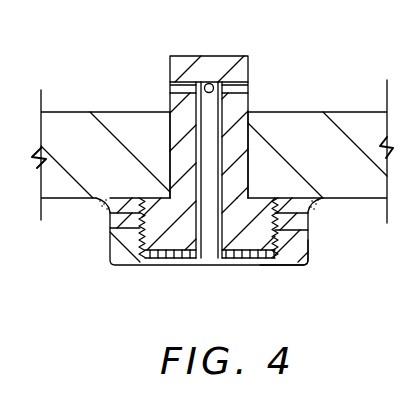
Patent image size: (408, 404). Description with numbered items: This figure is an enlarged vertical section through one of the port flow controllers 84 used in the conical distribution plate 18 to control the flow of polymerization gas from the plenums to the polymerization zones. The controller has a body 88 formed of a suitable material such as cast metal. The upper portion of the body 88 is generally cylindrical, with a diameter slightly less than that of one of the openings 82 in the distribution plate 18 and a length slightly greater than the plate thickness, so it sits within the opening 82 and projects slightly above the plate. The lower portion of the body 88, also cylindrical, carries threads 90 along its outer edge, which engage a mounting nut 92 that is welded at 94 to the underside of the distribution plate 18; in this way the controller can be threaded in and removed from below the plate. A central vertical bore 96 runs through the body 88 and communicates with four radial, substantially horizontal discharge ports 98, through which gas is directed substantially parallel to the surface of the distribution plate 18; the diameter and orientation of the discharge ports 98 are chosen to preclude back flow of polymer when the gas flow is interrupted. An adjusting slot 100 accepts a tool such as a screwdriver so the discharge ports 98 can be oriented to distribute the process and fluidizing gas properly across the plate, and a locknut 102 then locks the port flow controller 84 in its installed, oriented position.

The distribution plate 18 is at (348, 112).
The opening 82 is at (164, 149).
The port flow controller 84 is at (266, 45).
The body 88 is at (245, 132).
The threads 90 is at (110, 223).
The mounting nut 92 is at (303, 220).
The weld 94 is at (98, 208).
The central vertical bore 96 is at (216, 263).
The discharge ports 98 is at (195, 83).
The adjusting slot 100 is at (238, 263).
The locknut 102 is at (308, 252).